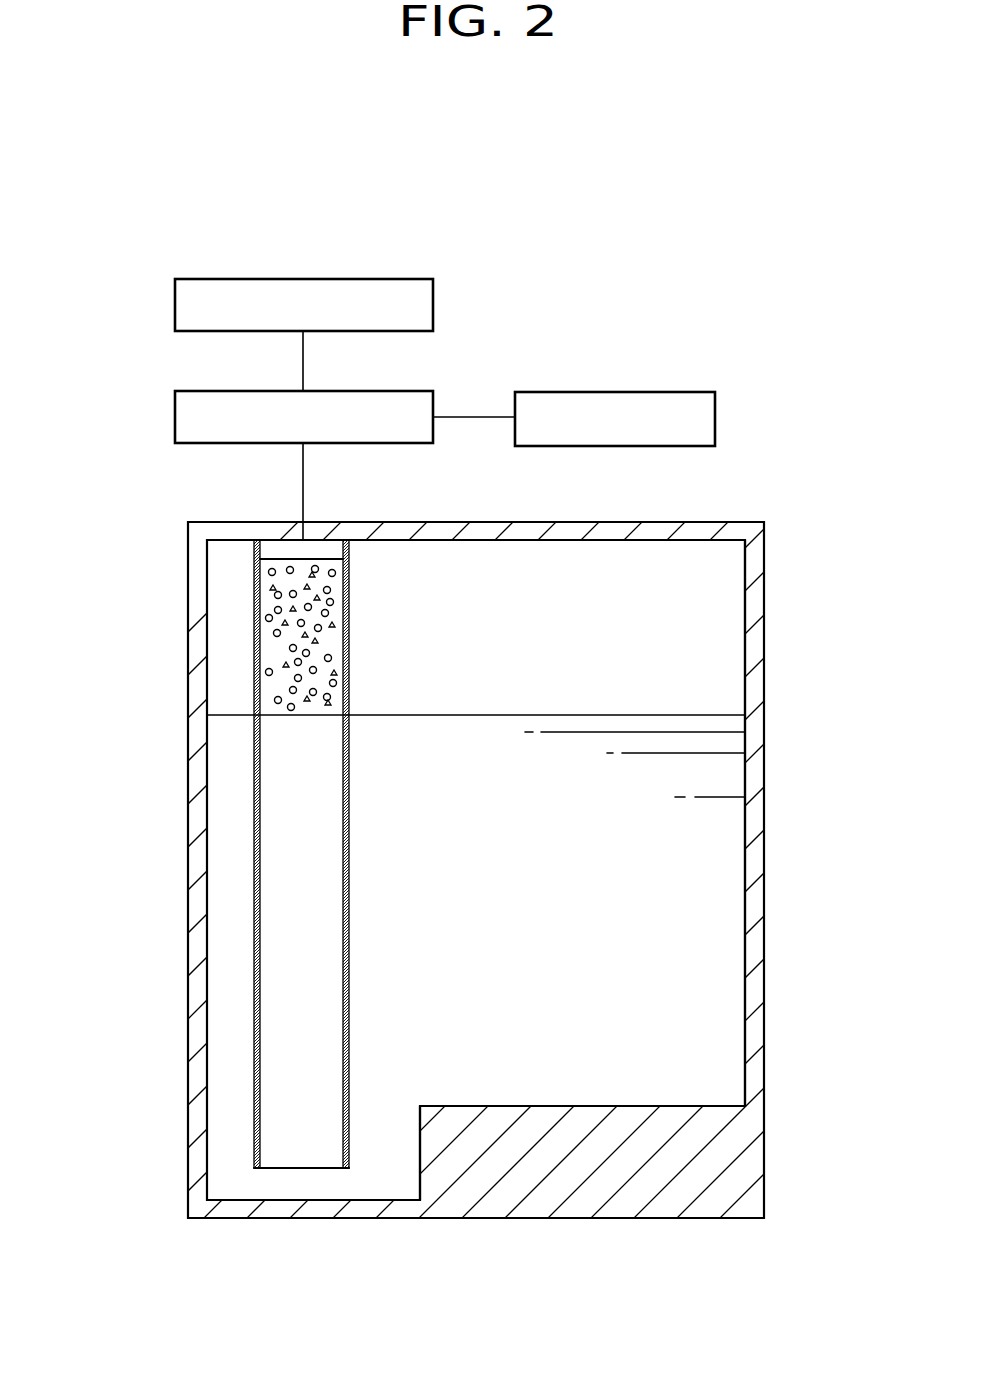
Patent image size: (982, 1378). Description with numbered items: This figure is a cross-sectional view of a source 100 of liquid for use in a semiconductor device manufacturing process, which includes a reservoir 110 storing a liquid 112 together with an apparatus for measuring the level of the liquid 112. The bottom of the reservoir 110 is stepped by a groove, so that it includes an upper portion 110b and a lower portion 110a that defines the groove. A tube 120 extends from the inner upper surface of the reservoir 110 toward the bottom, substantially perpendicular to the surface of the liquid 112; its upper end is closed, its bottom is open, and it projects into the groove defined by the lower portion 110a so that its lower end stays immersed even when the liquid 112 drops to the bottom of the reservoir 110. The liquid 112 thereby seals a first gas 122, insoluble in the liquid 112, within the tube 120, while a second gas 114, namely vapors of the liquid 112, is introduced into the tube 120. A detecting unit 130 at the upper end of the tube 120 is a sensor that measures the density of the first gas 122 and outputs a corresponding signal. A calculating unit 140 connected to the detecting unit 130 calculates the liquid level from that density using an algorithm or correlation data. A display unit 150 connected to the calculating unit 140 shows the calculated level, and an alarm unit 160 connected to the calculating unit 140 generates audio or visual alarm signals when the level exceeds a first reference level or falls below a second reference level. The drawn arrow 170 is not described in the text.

The source of liquid 100 is at (526, 174).
The reservoir 110 is at (197, 847).
The lower portion of the bottom of the reservoir 110a is at (360, 1200).
The upper portion of the bottom of the reservoir 110b is at (525, 1106).
The liquid 112 is at (730, 987).
The second gas 114 is at (268, 652).
The tube 120 is at (257, 777).
The first gas 122 is at (270, 633).
The detecting unit 130 is at (265, 551).
The calculating unit 140 is at (175, 413).
The display unit 150 is at (175, 303).
The alarm unit 160 is at (570, 392).
The gas flow 170 is at (250, 585).